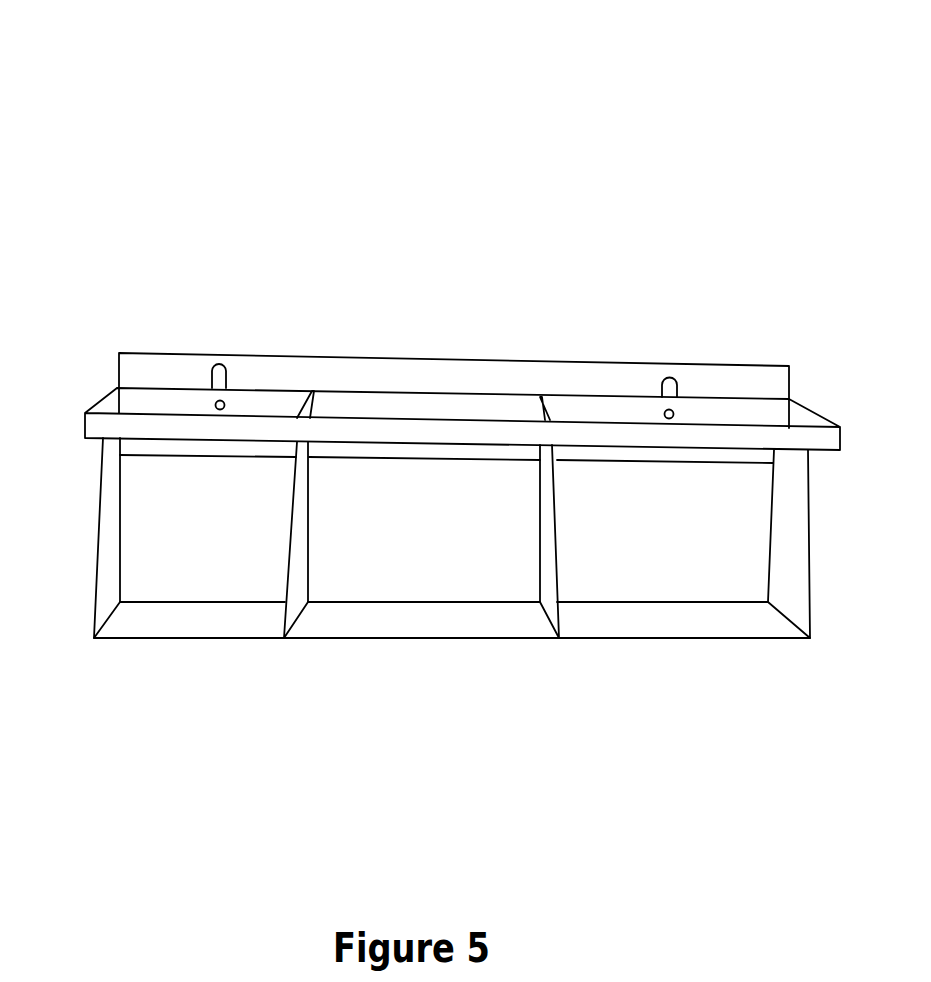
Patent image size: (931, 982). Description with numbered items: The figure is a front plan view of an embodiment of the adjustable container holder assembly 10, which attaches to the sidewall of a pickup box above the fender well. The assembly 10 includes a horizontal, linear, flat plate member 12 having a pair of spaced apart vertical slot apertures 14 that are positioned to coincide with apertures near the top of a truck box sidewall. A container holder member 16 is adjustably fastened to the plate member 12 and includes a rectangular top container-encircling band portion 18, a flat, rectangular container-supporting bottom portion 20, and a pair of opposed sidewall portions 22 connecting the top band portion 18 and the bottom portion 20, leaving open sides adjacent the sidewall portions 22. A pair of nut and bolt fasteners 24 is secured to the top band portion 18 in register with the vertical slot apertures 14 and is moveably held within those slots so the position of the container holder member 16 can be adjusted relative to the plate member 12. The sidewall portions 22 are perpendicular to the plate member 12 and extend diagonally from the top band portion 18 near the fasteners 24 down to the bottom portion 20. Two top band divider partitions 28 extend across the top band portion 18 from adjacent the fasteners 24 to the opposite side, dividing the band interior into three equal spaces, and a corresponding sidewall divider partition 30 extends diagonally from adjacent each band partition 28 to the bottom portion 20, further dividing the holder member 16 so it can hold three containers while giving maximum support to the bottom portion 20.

The adjustable container holder assembly 10 is at (231, 100).
The flat plate member 12 is at (428, 372).
The vertical slot apertures 14 is at (217, 372).
The container holder member 16 is at (322, 712).
The top band portion 18 is at (110, 405).
The bottom portion 20 is at (190, 622).
The sidewall portions 22 is at (110, 558).
The nut and bolt fasteners 24 is at (227, 403).
The top band divider partitions 28 is at (310, 392).
The sidewall divider partition 30 is at (297, 573).